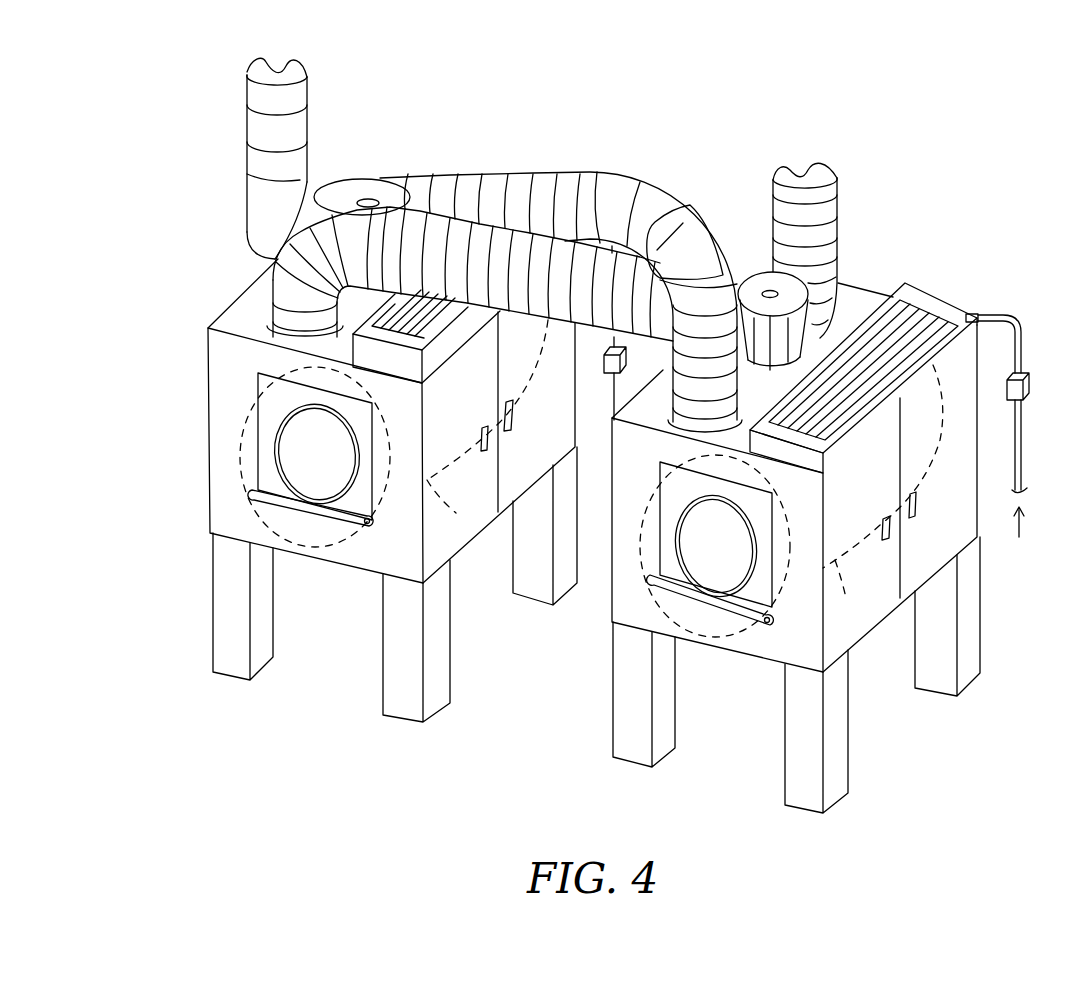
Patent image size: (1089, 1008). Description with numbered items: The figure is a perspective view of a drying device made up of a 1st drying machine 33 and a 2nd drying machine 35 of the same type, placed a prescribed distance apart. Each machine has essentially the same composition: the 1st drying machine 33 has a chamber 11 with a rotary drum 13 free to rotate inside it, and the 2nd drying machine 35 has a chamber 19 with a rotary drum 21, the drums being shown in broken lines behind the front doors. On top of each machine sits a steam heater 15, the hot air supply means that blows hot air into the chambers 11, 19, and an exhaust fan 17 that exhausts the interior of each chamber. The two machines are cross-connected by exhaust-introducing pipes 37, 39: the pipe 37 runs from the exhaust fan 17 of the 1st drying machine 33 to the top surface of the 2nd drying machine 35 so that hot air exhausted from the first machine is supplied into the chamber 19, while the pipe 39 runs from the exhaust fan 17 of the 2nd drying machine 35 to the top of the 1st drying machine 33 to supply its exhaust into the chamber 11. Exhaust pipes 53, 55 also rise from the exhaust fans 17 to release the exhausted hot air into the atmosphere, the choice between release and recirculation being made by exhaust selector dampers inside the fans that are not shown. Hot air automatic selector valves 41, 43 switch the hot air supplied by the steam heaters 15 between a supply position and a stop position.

The chamber 11 is at (208, 418).
The rotary drum 13 is at (487, 428).
The steam heater 15 is at (462, 342).
The exhaust fan 17 is at (750, 282).
The chamber 19 is at (630, 496).
The rotary drum 21 is at (883, 497).
The 1st drying machine 33 is at (205, 504).
The 2nd drying machine 35 is at (992, 604).
The exhaust-introducing pipe 37 is at (590, 176).
The exhaust-introducing pipe 39 is at (509, 294).
The hot air automatic selector valve 41 is at (602, 372).
The hot air automatic selector valve 43 is at (1030, 385).
The exhaust pipe 53 is at (244, 122).
The exhaust pipe 55 is at (838, 236).